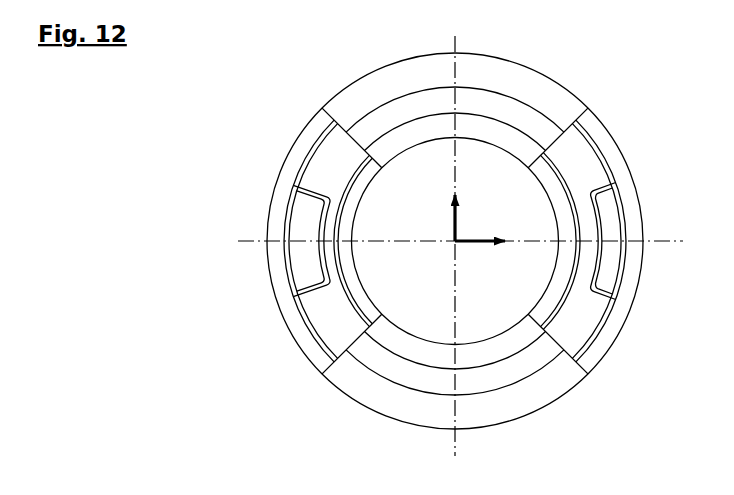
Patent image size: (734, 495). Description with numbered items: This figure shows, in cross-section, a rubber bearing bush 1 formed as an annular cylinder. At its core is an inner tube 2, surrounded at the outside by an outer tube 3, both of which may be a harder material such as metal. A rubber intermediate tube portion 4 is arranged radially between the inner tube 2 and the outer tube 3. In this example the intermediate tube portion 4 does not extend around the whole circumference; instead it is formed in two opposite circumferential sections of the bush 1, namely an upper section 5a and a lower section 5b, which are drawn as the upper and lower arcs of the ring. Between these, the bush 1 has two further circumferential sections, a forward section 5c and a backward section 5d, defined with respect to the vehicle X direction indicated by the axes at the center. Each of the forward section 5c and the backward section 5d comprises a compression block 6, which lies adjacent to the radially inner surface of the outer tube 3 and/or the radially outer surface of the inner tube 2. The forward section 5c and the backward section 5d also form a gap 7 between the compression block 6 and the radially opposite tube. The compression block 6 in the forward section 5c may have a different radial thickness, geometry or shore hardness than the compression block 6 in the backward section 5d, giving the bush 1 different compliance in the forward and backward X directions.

The bush 1 is at (222, 83).
The inner tube 2 is at (505, 140).
The outer tube 3 is at (578, 112).
The intermediate tube portion 4 is at (532, 127).
The upper section 5a is at (488, 80).
The lower section 5b is at (520, 397).
The forward section 5c is at (598, 351).
The backward section 5d is at (317, 348).
The compression block 6 is at (303, 258).
The gap 7 is at (331, 229).